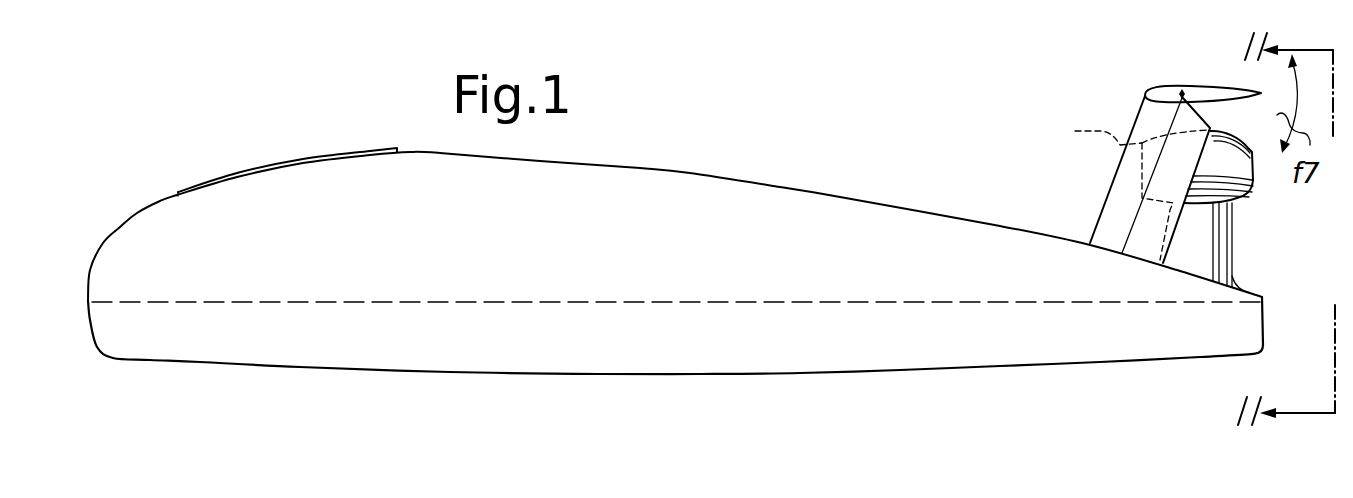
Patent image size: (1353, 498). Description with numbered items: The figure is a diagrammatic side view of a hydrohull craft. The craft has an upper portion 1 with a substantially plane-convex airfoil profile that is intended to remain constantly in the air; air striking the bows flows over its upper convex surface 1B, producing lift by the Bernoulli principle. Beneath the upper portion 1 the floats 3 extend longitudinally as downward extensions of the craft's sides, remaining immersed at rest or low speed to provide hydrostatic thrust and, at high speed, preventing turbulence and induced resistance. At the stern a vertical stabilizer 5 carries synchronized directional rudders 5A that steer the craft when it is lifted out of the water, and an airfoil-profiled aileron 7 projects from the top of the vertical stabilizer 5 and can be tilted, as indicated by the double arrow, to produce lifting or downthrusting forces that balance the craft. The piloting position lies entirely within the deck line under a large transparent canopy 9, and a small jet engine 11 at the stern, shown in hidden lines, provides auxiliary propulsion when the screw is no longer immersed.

The upper portion 1 is at (675, 263).
The upper convex surface 1B is at (696, 170).
The portions or floats 3 is at (1155, 357).
The vertical stabilizers 5 is at (1106, 212).
The synchronized directional rudders 5A is at (1158, 216).
The ailerons 7 is at (1204, 88).
The transparent canopy 9 is at (297, 165).
The jet engine 11 is at (1125, 189).